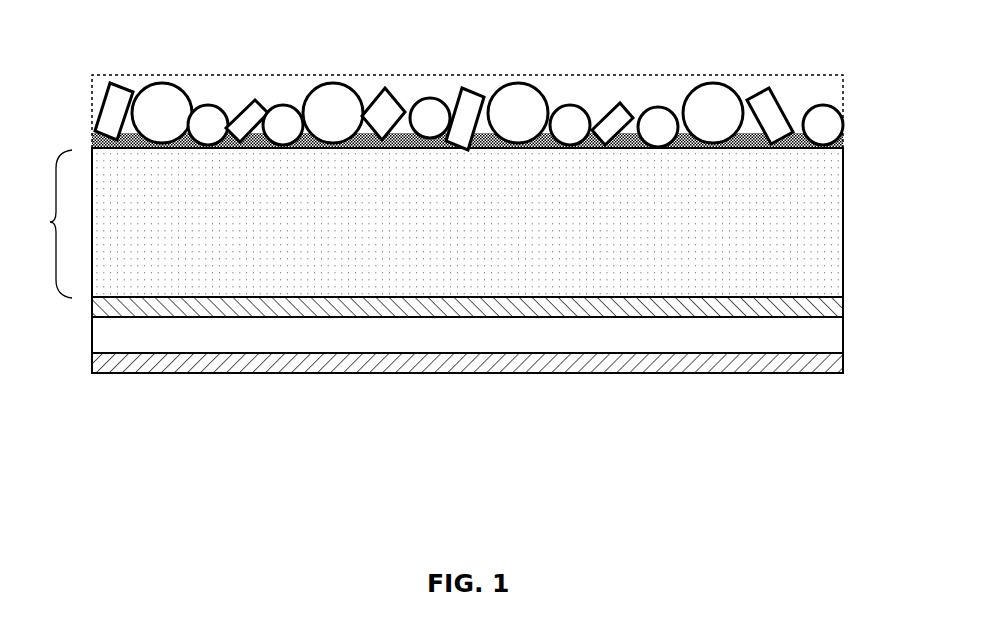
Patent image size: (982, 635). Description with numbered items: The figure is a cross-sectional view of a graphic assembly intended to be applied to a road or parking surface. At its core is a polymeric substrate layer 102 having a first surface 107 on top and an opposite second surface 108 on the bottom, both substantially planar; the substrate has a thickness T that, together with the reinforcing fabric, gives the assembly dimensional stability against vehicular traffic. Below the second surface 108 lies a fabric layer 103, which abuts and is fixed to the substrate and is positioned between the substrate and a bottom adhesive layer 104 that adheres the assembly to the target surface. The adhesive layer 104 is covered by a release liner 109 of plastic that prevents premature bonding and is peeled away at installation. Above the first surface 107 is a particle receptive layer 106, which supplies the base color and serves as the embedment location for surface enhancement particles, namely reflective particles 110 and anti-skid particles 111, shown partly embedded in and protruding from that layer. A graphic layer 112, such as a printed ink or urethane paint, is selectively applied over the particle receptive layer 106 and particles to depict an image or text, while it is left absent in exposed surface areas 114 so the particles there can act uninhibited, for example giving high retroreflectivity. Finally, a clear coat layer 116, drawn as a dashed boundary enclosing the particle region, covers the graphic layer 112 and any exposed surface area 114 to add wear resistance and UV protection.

The polymeric substrate layer 102 is at (843, 206).
The fabric layer 103 is at (843, 304).
The adhesive layer 104 is at (843, 341).
The particle receptive layer 106 is at (100, 134).
The first surface 107 is at (92, 148).
The second surface 108 is at (92, 297).
The release liner 109 is at (843, 371).
The reflective particles 110 is at (166, 99).
The anti-skid particles 111 is at (385, 107).
The graphic layer 112 is at (335, 83).
The exposed surface areas 114 is at (667, 88).
The clear coat layer 116 is at (748, 75).
The thickness T is at (50, 222).